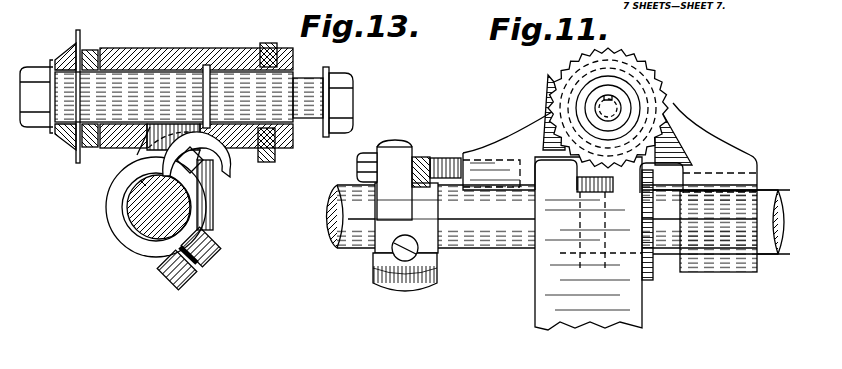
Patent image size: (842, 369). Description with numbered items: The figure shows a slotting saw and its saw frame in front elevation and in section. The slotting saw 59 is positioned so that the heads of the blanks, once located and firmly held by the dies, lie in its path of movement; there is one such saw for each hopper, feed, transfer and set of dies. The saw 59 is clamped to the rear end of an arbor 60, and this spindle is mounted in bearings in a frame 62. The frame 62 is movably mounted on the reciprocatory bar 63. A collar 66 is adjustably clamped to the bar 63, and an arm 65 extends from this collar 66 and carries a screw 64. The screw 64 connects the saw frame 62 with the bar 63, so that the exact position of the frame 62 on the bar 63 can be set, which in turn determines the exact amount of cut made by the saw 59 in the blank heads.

In FIG. 13, the slotting saw 59 is at (77, 160).
In FIG. 11, the slotting saw 59 is at (658, 62).
In FIG. 13, the arbor 60 is at (124, 78).
In FIG. 11, the arbor 60 is at (612, 108).
In FIG. 13, the frame 62 is at (193, 62).
In FIG. 11, the frame 62 is at (497, 145).
In FIG. 13, the reciprocatory bar 63 is at (145, 228).
In FIG. 11, the reciprocatory bar 63 is at (365, 241).
In FIG. 13, the screw 64 is at (210, 187).
In FIG. 11, the screw 64 is at (442, 157).
In FIG. 13, the arm 65 is at (232, 171).
In FIG. 11, the arm 65 is at (403, 147).
In FIG. 13, the collar 66 is at (116, 215).
In FIG. 11, the collar 66 is at (378, 262).